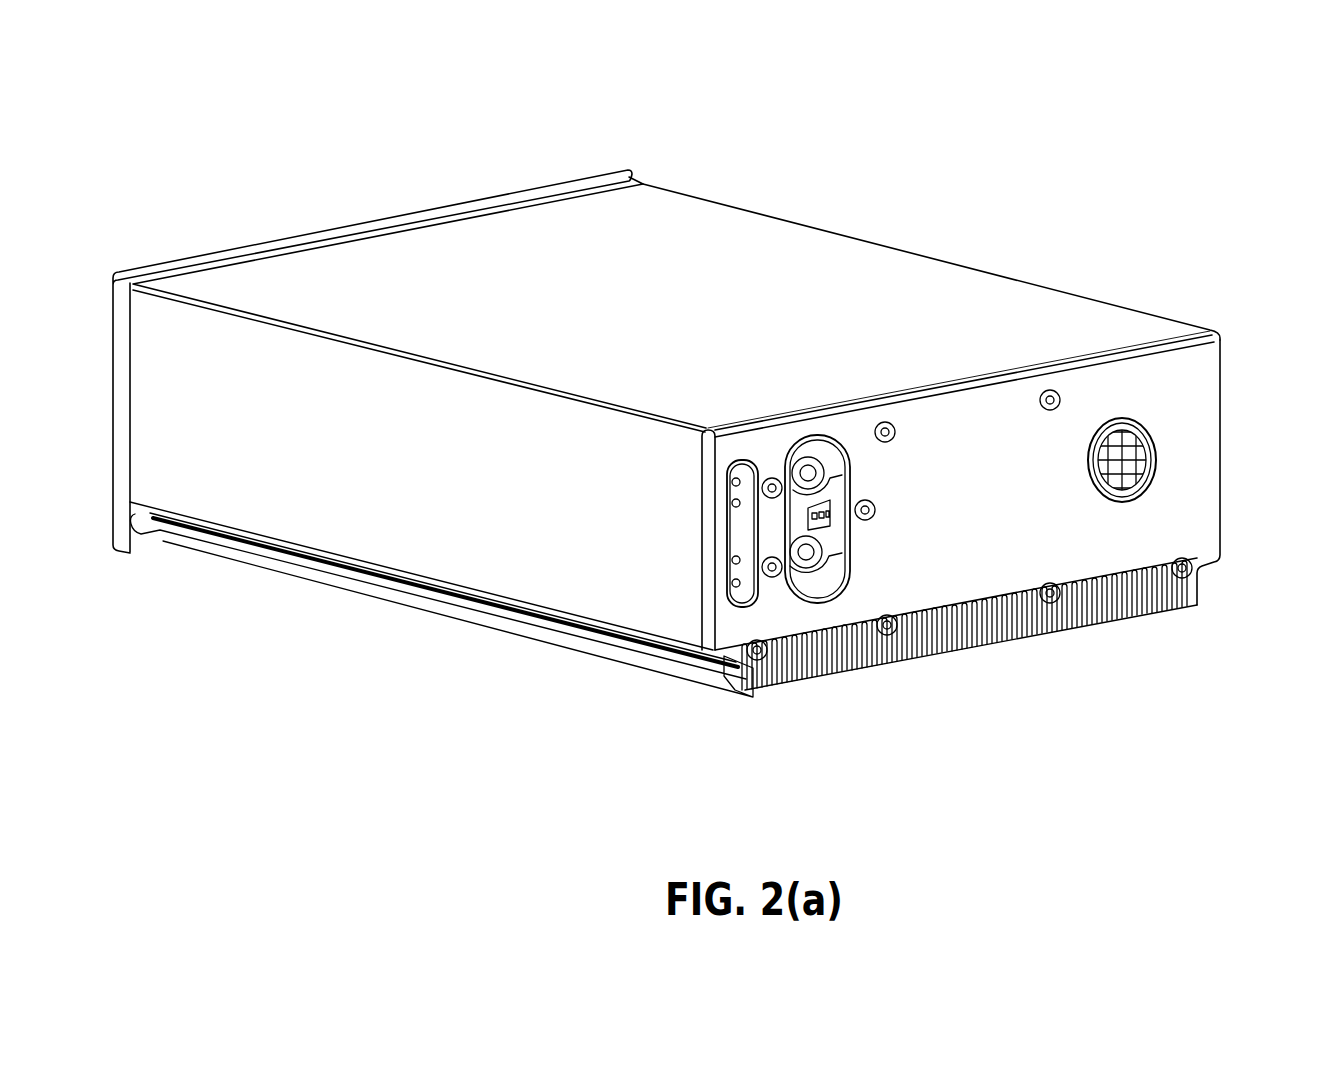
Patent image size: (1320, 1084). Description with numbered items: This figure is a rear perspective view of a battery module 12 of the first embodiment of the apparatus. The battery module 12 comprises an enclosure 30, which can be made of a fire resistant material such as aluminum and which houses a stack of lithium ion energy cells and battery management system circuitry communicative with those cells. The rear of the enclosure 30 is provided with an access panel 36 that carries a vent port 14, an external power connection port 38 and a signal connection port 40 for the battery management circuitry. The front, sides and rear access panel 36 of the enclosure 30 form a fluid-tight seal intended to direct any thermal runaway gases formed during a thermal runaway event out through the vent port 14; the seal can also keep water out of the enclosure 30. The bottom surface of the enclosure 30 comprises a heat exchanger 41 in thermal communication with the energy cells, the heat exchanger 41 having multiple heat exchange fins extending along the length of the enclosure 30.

The battery module 12 is at (283, 131).
The enclosure 30 is at (925, 277).
The vent port 14 is at (1152, 432).
The access panel 36 is at (1177, 503).
The external power connection port 38 is at (820, 587).
The signal connection port 40 is at (728, 535).
The heat exchanger 41 is at (1083, 628).